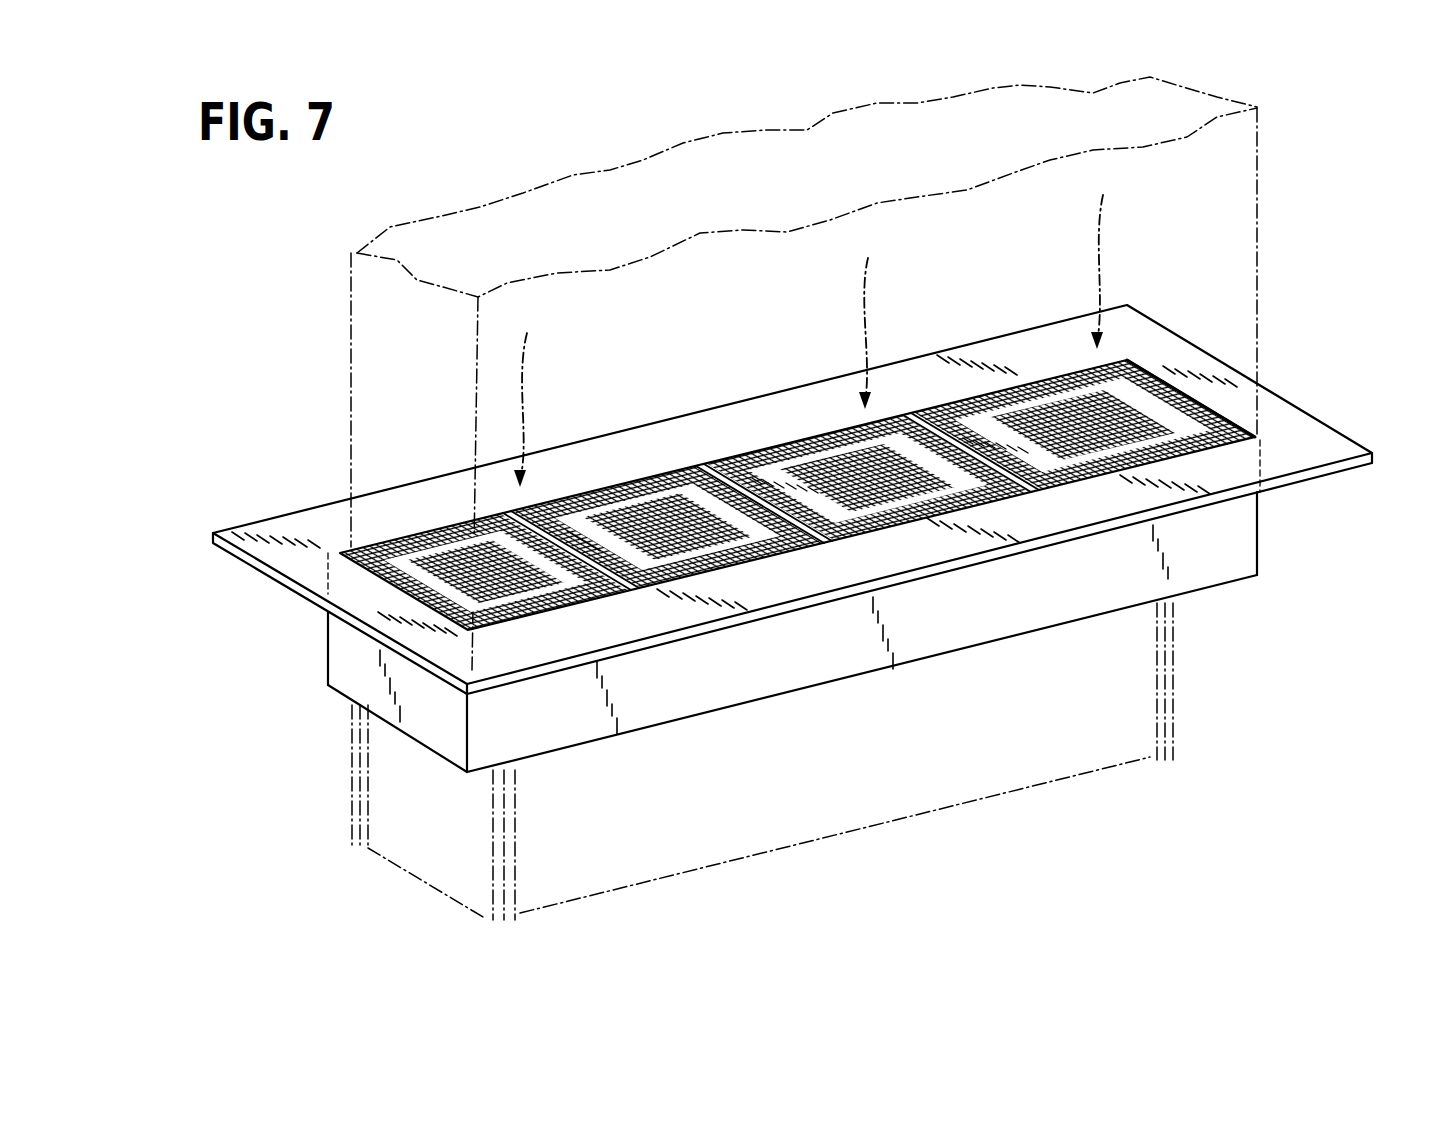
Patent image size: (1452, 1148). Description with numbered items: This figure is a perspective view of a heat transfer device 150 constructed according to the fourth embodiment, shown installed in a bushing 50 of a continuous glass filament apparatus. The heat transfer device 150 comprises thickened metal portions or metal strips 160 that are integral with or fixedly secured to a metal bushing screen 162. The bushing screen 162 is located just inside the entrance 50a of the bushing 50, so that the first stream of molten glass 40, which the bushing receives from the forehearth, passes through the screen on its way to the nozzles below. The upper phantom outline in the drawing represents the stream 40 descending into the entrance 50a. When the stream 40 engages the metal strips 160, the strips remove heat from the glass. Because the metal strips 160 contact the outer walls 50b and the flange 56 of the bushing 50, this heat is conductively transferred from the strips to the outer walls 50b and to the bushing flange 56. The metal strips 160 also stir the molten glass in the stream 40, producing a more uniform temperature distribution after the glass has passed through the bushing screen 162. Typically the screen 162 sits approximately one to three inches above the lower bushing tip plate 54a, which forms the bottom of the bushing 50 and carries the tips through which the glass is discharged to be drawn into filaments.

The first stream of molten glass 40 is at (1257, 222).
The bushing 50 is at (1335, 445).
The entrance of the bushing 50a is at (1145, 397).
The outer walls of the bushing 50b is at (1233, 537).
The lower bushing tip plate 54a is at (720, 710).
The bushing flange 56 is at (1275, 418).
The heat transfer device 150 is at (590, 527).
The metal strips 160 is at (553, 520).
The bushing screen 162 is at (1197, 407).